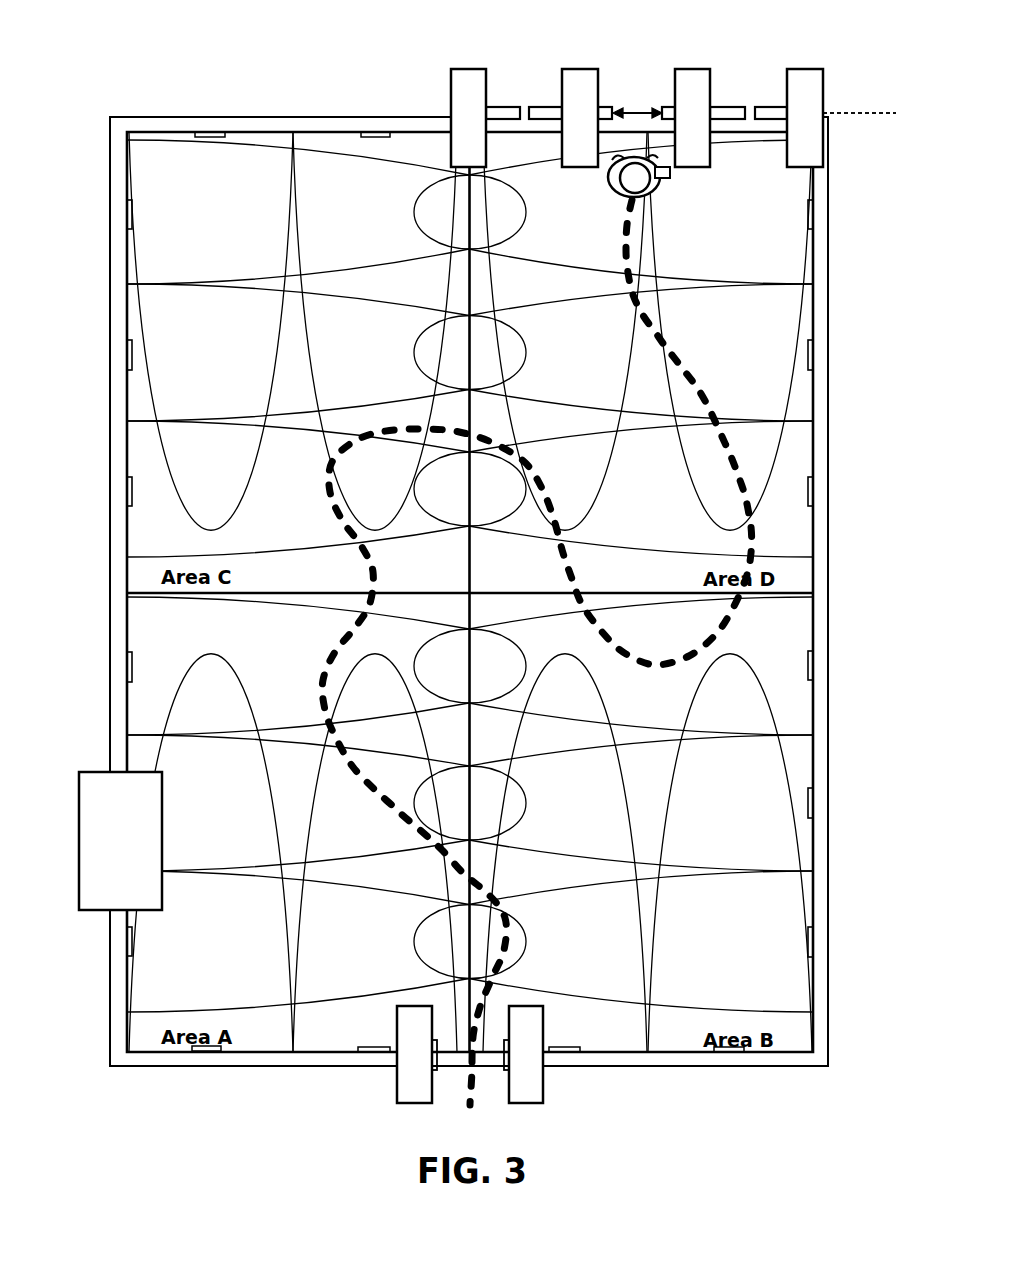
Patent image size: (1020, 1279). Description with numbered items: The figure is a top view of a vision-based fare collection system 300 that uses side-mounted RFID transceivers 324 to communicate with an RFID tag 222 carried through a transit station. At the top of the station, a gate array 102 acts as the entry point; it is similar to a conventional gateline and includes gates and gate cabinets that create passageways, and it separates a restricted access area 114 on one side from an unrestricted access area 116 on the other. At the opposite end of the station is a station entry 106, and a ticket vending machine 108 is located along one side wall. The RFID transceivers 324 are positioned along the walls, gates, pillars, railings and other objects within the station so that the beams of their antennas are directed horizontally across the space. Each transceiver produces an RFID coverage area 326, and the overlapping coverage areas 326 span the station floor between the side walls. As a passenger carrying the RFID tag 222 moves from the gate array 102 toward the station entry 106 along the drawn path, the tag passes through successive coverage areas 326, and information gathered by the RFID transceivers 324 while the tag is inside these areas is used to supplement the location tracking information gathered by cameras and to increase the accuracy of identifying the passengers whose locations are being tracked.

The vision-based fare collection system 300 is at (158, 1105).
The gate array 102 is at (832, 60).
The station entry 106 is at (396, 1090).
The ticket vending machine 108 is at (93, 771).
The restricted access area 114 is at (859, 101).
The unrestricted access area 116 is at (859, 127).
The RFID tag 222 is at (670, 172).
The RFID transceivers 324 is at (126, 224).
The RFID coverage areas 326 is at (527, 212).